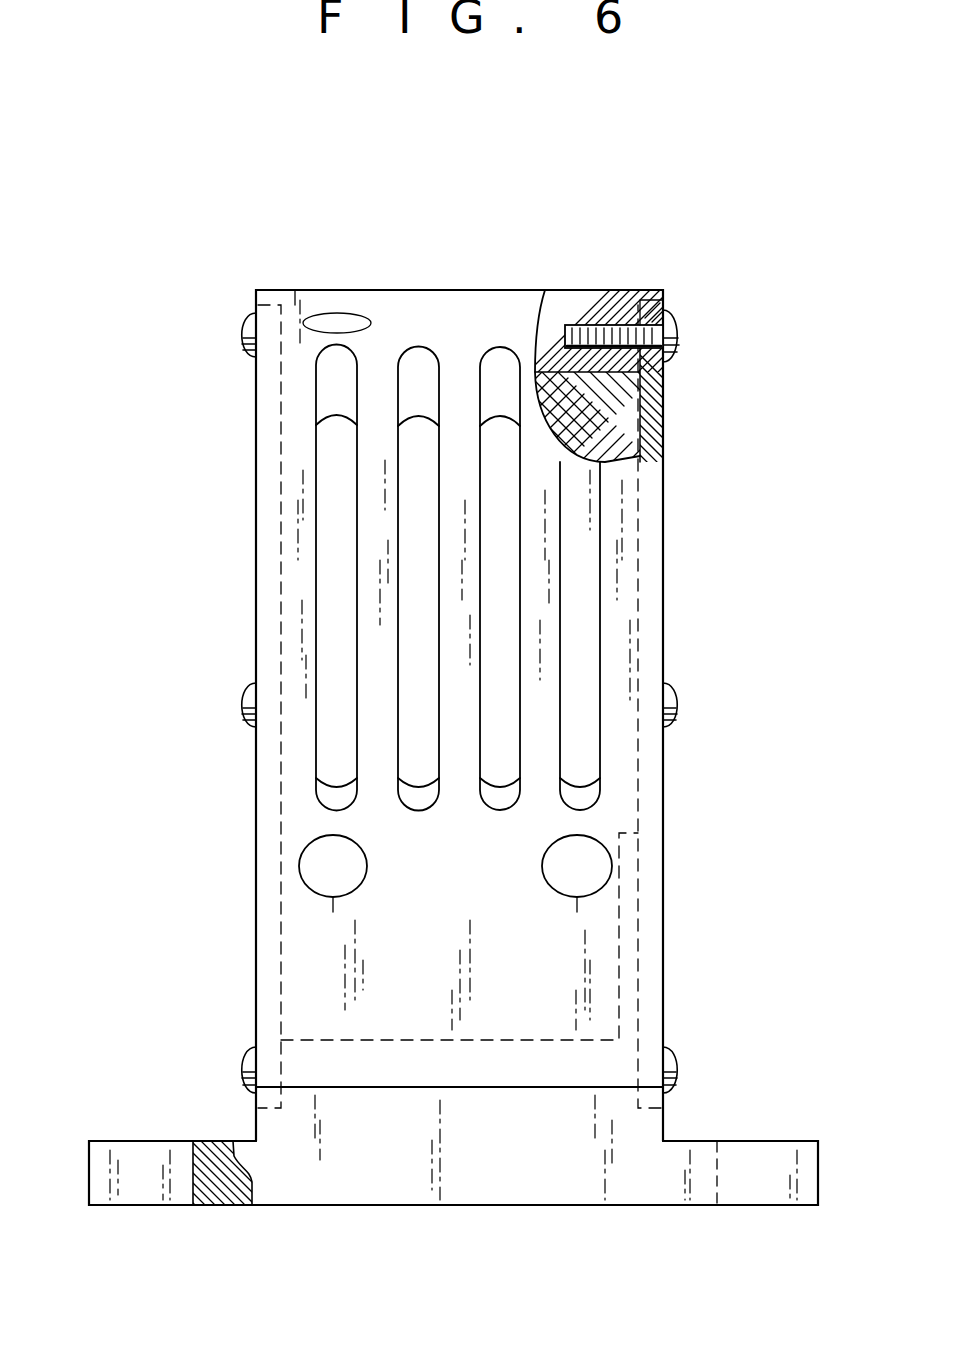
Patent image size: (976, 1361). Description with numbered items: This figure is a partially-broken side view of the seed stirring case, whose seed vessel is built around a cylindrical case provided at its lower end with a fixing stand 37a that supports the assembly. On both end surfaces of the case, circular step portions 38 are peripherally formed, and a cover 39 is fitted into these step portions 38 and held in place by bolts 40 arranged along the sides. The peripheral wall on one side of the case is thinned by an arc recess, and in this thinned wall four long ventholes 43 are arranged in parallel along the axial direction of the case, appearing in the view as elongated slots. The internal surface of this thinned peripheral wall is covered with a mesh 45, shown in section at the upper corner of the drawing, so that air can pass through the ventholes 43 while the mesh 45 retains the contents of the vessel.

The fixing stand 37a is at (618, 1196).
The circular step portion 38 is at (274, 1056).
The cover 39 is at (266, 936).
The bolt 40 is at (253, 1086).
The long venthole 43 is at (419, 588).
The mesh 45 is at (663, 423).